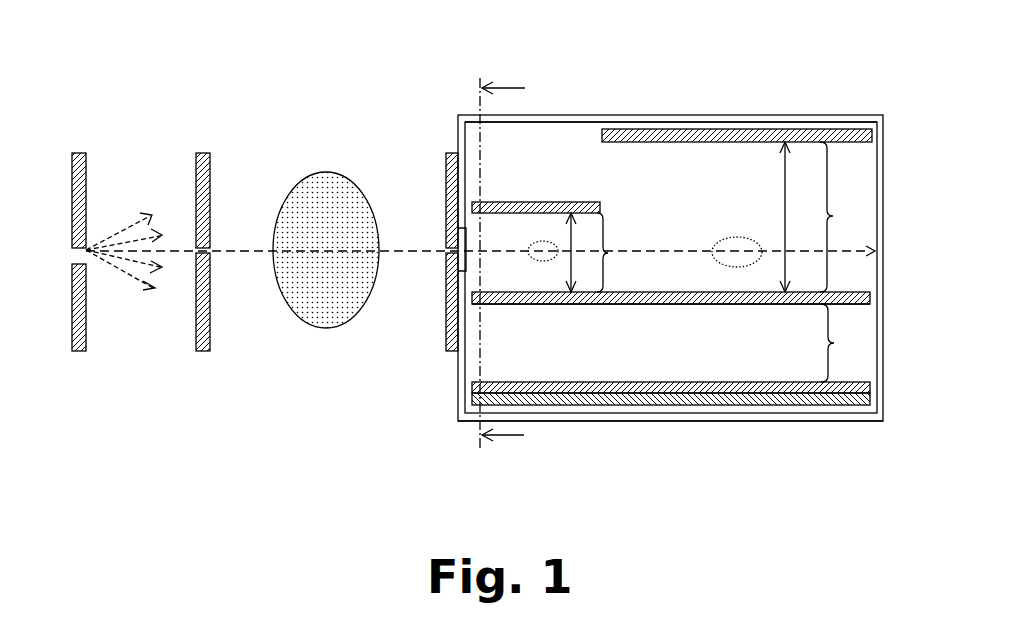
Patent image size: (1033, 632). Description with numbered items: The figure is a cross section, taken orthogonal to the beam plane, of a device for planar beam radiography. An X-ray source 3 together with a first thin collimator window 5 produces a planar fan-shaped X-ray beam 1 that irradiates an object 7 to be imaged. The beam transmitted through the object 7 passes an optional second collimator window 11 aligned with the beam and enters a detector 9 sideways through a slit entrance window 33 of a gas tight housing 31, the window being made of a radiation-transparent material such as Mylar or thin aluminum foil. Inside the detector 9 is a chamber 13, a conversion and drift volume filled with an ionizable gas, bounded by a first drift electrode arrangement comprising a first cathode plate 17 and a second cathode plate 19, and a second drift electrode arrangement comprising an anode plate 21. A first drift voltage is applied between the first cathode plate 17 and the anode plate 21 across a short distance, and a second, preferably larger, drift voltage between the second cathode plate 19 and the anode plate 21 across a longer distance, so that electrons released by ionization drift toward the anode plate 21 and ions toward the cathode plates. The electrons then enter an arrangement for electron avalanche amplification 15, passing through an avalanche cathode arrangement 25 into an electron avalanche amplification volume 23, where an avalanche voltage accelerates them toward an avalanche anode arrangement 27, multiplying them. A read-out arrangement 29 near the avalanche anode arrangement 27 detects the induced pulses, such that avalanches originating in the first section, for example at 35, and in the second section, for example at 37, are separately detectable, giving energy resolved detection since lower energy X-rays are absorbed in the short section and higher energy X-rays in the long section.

The planar X-ray beam 1 is at (252, 250).
The X-ray source 3 is at (85, 249).
The first thin collimator window 5 is at (210, 333).
The object 7 is at (333, 328).
The detector 9 is at (433, 122).
The second collimator window 11 is at (447, 340).
The chamber 13 is at (642, 210).
The arrangement for electron avalanche amplification 15 is at (883, 333).
The first cathode plate 17 is at (578, 201).
The second cathode plate 19 is at (825, 129).
The anode plate 21 is at (713, 292).
The electron avalanche amplification volume 23 is at (745, 330).
The avalanche cathode arrangement 25 is at (632, 305).
The avalanche anode arrangement 27 is at (587, 381).
The read-out arrangement 29 is at (543, 400).
The gas tight housing 31 is at (810, 421).
The slit entrance window 33 is at (447, 243).
The ionization location in first chamber section 35 is at (540, 243).
The ionization location in second chamber section 37 is at (746, 245).